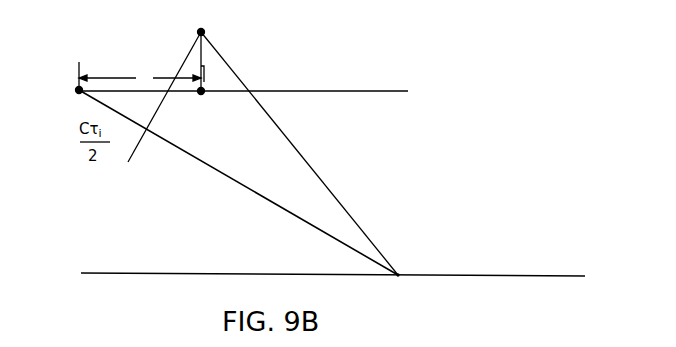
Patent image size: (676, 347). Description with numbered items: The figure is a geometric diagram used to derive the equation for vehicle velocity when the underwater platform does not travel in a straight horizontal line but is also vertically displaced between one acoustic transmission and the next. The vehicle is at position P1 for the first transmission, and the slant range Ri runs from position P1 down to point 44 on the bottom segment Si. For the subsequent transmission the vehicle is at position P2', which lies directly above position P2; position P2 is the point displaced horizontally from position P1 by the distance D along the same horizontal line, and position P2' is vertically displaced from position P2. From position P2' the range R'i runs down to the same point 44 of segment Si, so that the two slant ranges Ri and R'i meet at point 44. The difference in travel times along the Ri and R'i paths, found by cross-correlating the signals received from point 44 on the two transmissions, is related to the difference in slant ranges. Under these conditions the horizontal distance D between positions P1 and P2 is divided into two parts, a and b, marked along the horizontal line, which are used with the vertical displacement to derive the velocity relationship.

The point of segment Si 44 is at (399, 274).
The position P1 is at (78, 90).
The position P2 is at (213, 103).
The position P2' is at (220, 37).
The segment Si is at (410, 290).
The horizontal distance D is at (140, 75).
The slant range Ri is at (263, 196).
The slant range R'i is at (299, 153).
The distance a is at (147, 102).
The distance b is at (179, 104).